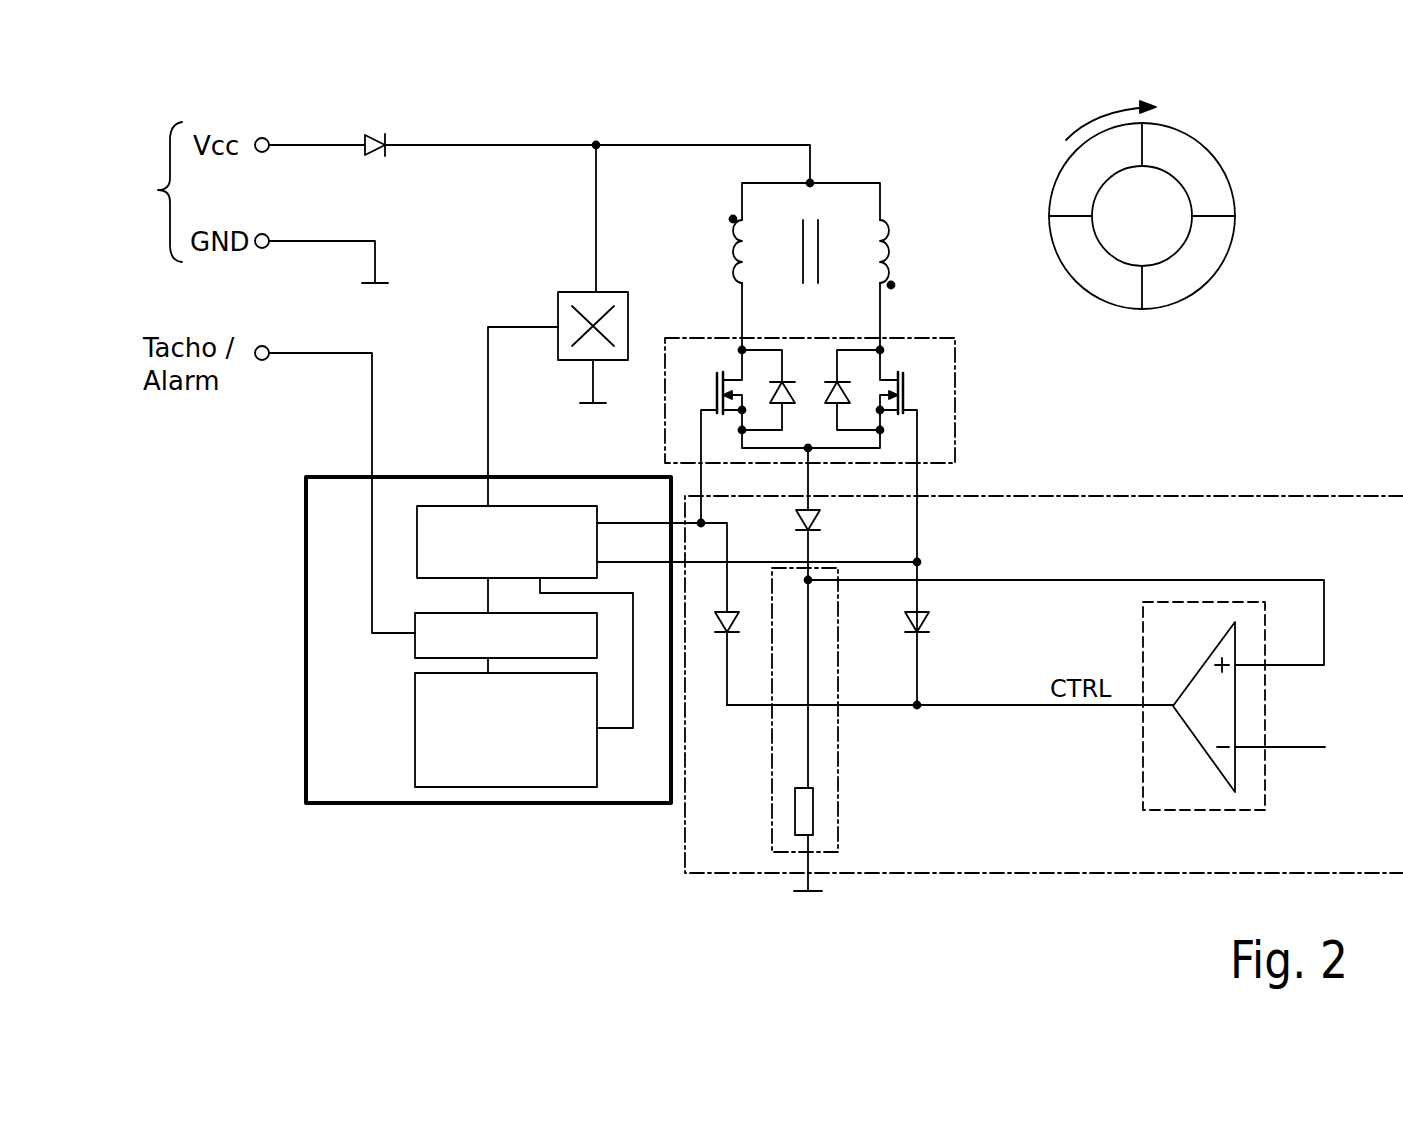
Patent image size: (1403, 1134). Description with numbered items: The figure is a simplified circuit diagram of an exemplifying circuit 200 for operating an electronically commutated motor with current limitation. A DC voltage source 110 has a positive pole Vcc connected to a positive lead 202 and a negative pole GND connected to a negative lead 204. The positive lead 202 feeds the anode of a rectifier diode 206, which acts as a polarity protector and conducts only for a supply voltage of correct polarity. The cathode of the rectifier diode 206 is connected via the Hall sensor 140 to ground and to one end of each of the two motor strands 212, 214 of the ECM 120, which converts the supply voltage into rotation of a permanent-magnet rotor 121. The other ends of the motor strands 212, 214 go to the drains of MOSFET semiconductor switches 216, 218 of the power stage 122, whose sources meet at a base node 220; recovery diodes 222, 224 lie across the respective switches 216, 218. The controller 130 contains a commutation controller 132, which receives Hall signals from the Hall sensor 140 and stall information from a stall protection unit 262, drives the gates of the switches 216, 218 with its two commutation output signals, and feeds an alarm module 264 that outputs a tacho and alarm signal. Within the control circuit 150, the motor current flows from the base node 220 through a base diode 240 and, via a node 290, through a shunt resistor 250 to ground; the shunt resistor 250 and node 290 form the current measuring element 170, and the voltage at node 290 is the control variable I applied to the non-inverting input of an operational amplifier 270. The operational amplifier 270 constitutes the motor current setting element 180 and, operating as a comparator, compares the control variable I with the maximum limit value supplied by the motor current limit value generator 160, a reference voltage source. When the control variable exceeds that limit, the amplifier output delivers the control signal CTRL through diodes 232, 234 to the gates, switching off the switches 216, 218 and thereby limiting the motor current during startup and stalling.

The DC voltage source 110 is at (143, 192).
The rectifier diode 206 is at (388, 132).
The positive lead 202 is at (543, 141).
The negative lead 204 is at (377, 268).
The Hall sensor 140 is at (558, 292).
The ECM 120 is at (904, 214).
The motor strand 214 is at (732, 250).
The motor strand 212 is at (890, 263).
The rotor 121 is at (1232, 178).
The circuit 200 is at (1393, 224).
The power stage 122 is at (957, 415).
The semiconductor switch 218 is at (690, 362).
The semiconductor switch 216 is at (918, 365).
The recovery diode 224 is at (800, 392).
The recovery diode 222 is at (820, 392).
The base node 220 is at (815, 454).
The control circuit 150 is at (1280, 495).
The base diode 240 is at (822, 512).
The controller 130 is at (580, 806).
The commutation controller 132 is at (560, 497).
The alarm module 264 is at (415, 648).
The stall protection unit 262 is at (415, 737).
The diode 234 is at (722, 632).
The diode 232 is at (931, 620).
The node 290 is at (812, 584).
The current measuring element 170 is at (840, 768).
The shunt resistor 250 is at (810, 820).
The motor current setting element 180 is at (1186, 812).
The operational amplifier 270 is at (1214, 738).
The motor current limit value generator 160 is at (1326, 750).